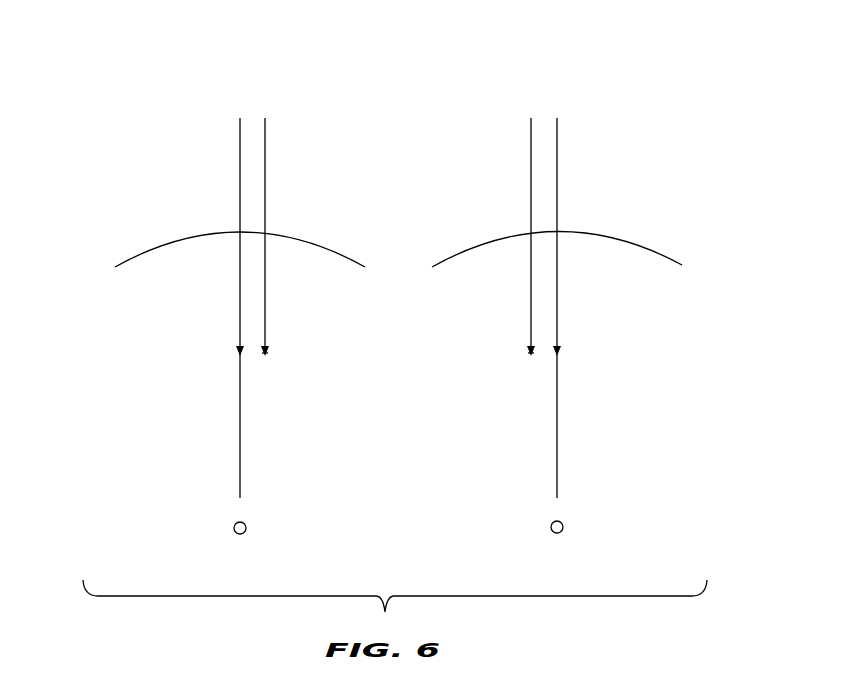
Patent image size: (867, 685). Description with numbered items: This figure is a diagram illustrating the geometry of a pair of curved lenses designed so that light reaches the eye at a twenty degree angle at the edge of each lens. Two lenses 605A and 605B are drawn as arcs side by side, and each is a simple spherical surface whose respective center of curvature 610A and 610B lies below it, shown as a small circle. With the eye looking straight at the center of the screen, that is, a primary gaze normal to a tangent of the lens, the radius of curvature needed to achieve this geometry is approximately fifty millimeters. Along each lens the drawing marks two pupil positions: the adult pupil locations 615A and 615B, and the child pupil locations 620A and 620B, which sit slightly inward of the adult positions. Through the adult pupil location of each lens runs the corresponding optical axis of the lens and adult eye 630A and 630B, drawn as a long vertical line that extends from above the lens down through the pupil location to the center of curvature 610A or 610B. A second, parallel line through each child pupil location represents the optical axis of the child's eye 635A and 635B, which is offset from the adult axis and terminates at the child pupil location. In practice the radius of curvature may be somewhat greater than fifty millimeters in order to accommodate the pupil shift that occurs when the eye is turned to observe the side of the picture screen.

The lens 605A is at (123, 231).
The lens 605B is at (671, 231).
The center of curvature 610A is at (236, 545).
The center of curvature 610B is at (561, 545).
The adult pupil location 615A is at (223, 354).
The adult pupil location 615B is at (571, 354).
The child pupil location 620A is at (281, 354).
The child pupil location 620B is at (515, 354).
The optical axis of the lens and adult eye 630A is at (239, 112).
The optical axis of the lens and adult eye 630B is at (558, 112).
The optical axis of child's eye 635A is at (266, 112).
The optical axis of child's eye 635B is at (530, 112).